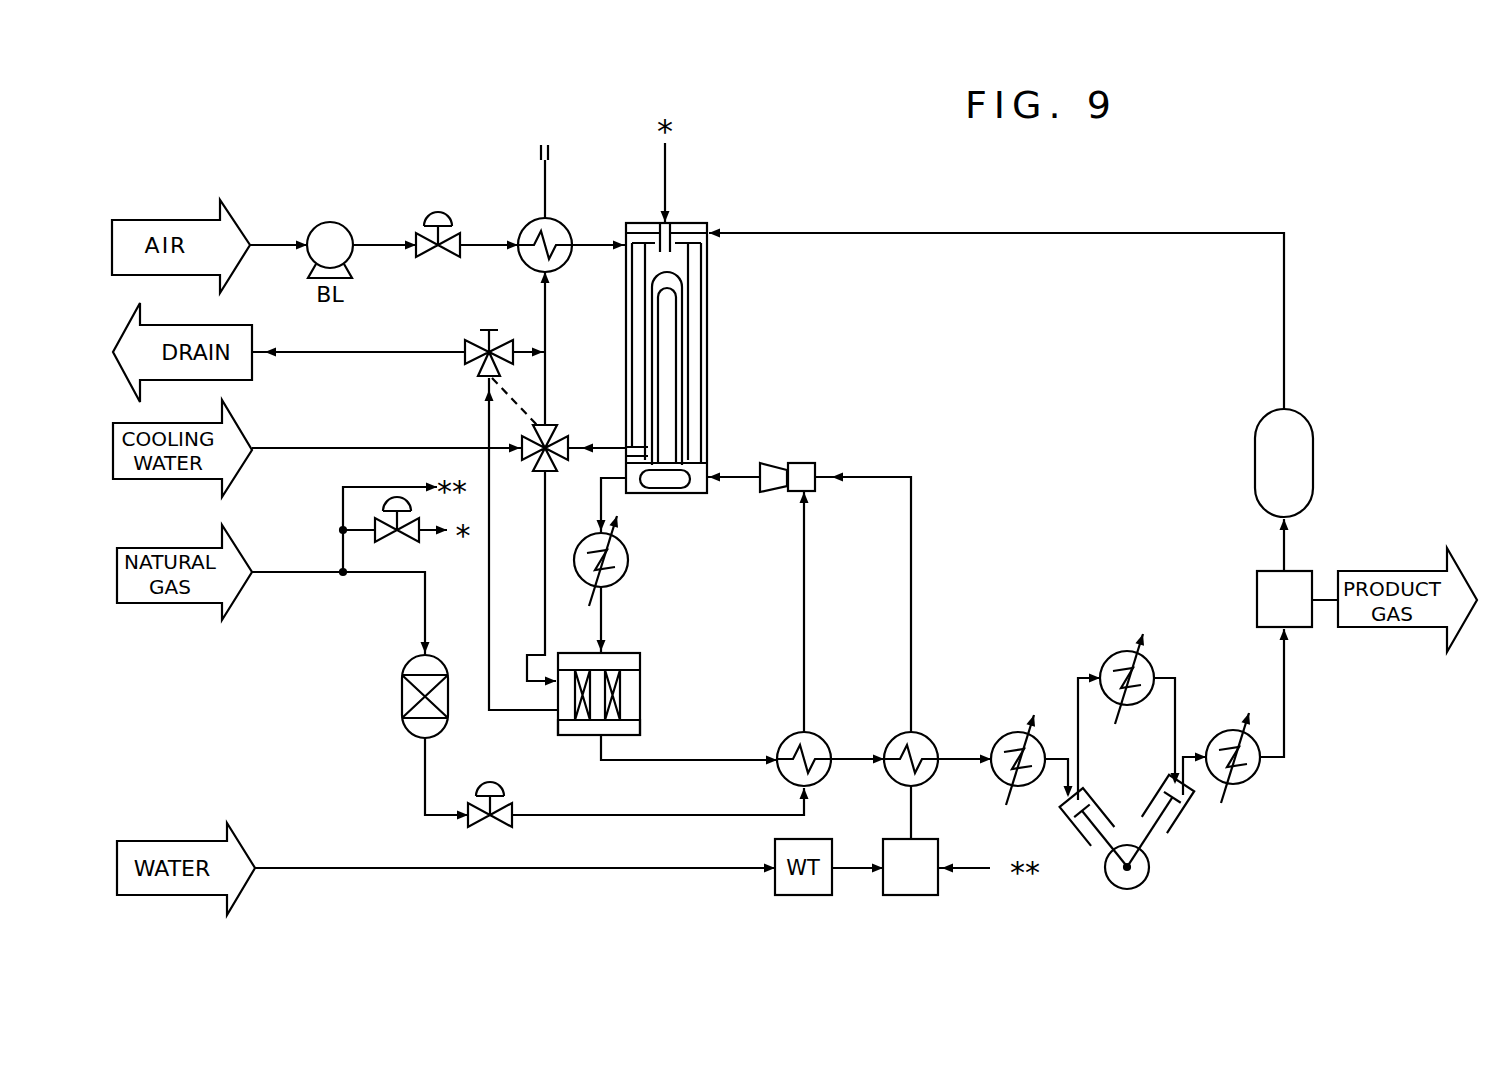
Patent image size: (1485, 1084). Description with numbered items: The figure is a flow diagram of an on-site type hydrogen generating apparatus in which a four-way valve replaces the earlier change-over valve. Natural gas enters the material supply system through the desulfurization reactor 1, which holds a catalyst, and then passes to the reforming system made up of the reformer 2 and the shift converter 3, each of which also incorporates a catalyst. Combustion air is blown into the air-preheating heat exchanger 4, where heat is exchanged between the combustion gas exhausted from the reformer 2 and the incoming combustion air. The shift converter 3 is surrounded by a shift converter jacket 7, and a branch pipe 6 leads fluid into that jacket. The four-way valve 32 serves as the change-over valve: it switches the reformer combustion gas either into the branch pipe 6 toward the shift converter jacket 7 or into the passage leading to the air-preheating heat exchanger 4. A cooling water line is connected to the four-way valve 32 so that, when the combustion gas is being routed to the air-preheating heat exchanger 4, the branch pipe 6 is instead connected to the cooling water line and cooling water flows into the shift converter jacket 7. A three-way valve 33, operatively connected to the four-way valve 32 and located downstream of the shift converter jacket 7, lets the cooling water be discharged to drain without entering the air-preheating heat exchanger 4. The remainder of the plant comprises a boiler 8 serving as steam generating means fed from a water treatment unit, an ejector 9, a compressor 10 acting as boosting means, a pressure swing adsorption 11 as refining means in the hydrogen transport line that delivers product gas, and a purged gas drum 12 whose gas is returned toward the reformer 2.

The desulfurization reactor 1 is at (405, 660).
The reformer 2 is at (707, 340).
The shift converter 3 is at (614, 674).
The air-preheating heat exchanger 4 is at (568, 228).
The branch pipe 6 is at (545, 580).
The shift converter jacket 7 is at (634, 712).
The boiler 8 is at (918, 840).
The ejector 9 is at (815, 466).
The compressor 10 is at (1186, 810).
The pressure swing adsorption 11 is at (1255, 600).
The purged gas drum 12 is at (1255, 466).
The four-way valve 32 is at (558, 428).
The three-way valve 33 is at (470, 340).